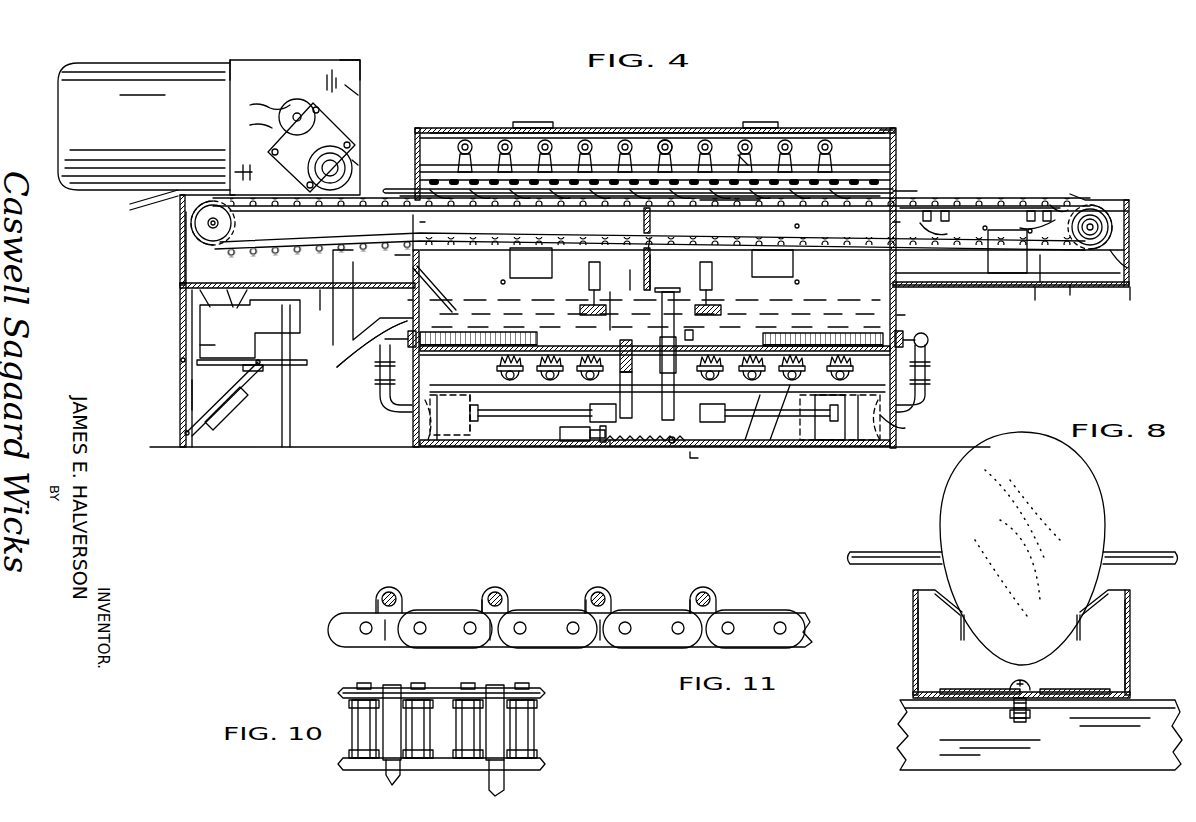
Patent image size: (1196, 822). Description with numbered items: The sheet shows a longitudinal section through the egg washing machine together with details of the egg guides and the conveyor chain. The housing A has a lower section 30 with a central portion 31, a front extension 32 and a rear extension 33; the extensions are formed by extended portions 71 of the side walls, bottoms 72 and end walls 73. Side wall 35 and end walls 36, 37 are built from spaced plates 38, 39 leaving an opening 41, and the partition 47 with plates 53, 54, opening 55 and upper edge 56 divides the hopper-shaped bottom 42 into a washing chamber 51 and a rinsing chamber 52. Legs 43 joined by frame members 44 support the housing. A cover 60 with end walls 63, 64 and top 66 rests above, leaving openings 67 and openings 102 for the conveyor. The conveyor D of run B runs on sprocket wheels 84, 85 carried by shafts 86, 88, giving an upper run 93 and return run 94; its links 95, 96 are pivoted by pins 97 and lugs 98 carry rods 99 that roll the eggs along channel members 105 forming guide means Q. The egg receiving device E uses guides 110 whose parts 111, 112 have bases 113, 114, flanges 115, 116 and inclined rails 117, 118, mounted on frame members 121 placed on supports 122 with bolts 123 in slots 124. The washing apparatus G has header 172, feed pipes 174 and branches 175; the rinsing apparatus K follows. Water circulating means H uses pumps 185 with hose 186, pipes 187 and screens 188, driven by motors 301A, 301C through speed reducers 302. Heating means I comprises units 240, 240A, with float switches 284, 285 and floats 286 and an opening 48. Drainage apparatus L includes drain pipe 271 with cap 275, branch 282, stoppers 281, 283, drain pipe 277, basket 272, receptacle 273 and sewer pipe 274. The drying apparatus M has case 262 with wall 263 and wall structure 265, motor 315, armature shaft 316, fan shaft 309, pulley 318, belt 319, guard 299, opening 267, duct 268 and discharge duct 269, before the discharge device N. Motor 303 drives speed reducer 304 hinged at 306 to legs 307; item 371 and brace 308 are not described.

In FIG. 4, the duct 269 is at (148, 80).
In FIG. 4, the wall structure 265 is at (290, 60).
In FIG. 4, the drying apparatus M is at (235, 62).
In FIG. 4, the case 262 is at (360, 62).
In FIG. 4, the left side wall 263 is at (352, 92).
In FIG. 4, the guard 299 is at (340, 128).
In FIG. 4, the shaft 309 is at (297, 113).
In FIG. 4, the armature shaft 316 is at (319, 161).
In FIG. 4, the motor 315 is at (350, 160).
In FIG. 4, the pulley 318 is at (250, 108).
In FIG. 4, the belt 319 is at (250, 128).
In FIG. 4, the discharge device N is at (142, 207).
In FIG. 4, the cover 60 is at (425, 125).
In FIG. 4, the end wall 64 is at (414, 155).
In FIG. 4, the openings 67 is at (412, 185).
In FIG. 4, the end wall 63 is at (897, 150).
In FIG. 4, the housing A is at (900, 136).
In FIG. 4, the openings 102 is at (870, 182).
In FIG. 4, the water conducting header 172 is at (486, 140).
In FIG. 4, the rinsing apparatus K is at (552, 143).
In FIG. 4, the top 66 is at (610, 133).
In FIG. 4, the transverse feed pipes 174 is at (700, 150).
In FIG. 4, the depending branches 175 is at (742, 158).
In FIG. 4, the water washing apparatus G is at (815, 148).
In FIG. 4, the sprocket wheels 85 is at (192, 225).
In FIG. 4, the conveyor D is at (1065, 184).
In FIG. 11, the conveyor D is at (785, 618).
In FIG. 10, the conveyor D is at (329, 667).
In FIG. 4, the end walls 73 is at (180, 258).
In FIG. 4, the shaft 88 is at (198, 247).
In FIG. 4, the shaft 86 is at (1092, 250).
In FIG. 4, the sprocket wheels 84 is at (1105, 226).
In FIG. 4, the supports 122 is at (1060, 212).
In FIG. 4, the transverse frame members 121 is at (952, 210).
In FIG. 8, the transverse frame members 121 is at (905, 765).
In FIG. 4, the upper run 93 is at (990, 200).
In FIG. 4, the egg receiving device E is at (1064, 203).
In FIG. 8, the egg receiving device E is at (905, 593).
In FIG. 4, the run B is at (1125, 264).
In FIG. 4, the channel members 105 is at (813, 222).
In FIG. 4, the plate 38 is at (412, 222).
In FIG. 4, the opening 41 is at (416, 240).
In FIG. 4, the plate 53 is at (643, 224).
In FIG. 4, the upper edge 56 is at (652, 236).
In FIG. 4, the guide means Q is at (720, 212).
In FIG. 4, the plate 39 is at (890, 262).
In FIG. 4, the chamber 52 is at (480, 266).
In FIG. 4, the cover plate 371 is at (512, 275).
In FIG. 4, the float operated switch 285 is at (590, 272).
In FIG. 4, the opening 55 is at (645, 250).
In FIG. 4, the partition 47 is at (625, 277).
In FIG. 4, the opening 48 is at (660, 268).
In FIG. 4, the cap 275 is at (668, 290).
In FIG. 4, the float operated switch 284 is at (712, 272).
In FIG. 4, the floats 286 is at (588, 308).
In FIG. 4, the stopper 281 is at (607, 345).
In FIG. 4, the wall 35 is at (895, 286).
In FIG. 4, the return run 94 is at (1045, 268).
In FIG. 4, the chamber 51 is at (780, 292).
In FIG. 4, the screens 188 is at (842, 333).
In FIG. 4, the central portion 31 is at (897, 300).
In FIG. 4, the wall 36 is at (897, 315).
In FIG. 4, the lower section 30 is at (903, 330).
In FIG. 4, the pipes 187 is at (925, 348).
In FIG. 4, the flexible hose 186 is at (928, 384).
In FIG. 4, the stopper 283 is at (655, 341).
In FIG. 4, the drain pipe 271 is at (693, 335).
In FIG. 4, the bottom 42 is at (492, 350).
In FIG. 4, the plate 54 is at (637, 379).
In FIG. 4, the heating unit 240A is at (543, 419).
In FIG. 4, the branch 282 is at (769, 419).
In FIG. 4, the screen basket 272 is at (645, 450).
In FIG. 4, the sewer pipe 274 is at (598, 442).
In FIG. 4, the receptacle 273 is at (614, 448).
In FIG. 4, the drain pipe 277 is at (622, 447).
In FIG. 4, the drainage apparatus L is at (691, 459).
In FIG. 4, the motor 301C is at (492, 428).
In FIG. 4, the motor 301A is at (812, 440).
In FIG. 4, the speed reducer 302 is at (830, 430).
In FIG. 4, the heating unit 240 is at (782, 398).
In FIG. 4, the heating means I is at (767, 400).
In FIG. 4, the legs 43 is at (647, 443).
In FIG. 4, the water pumps 185 is at (413, 442).
In FIG. 4, the frame members 44 is at (420, 450).
In FIG. 4, the water circulating means H is at (888, 430).
In FIG. 4, the bottoms 72 is at (197, 290).
In FIG. 4, the front extension 32 is at (1040, 296).
In FIG. 4, the extended portions 71 is at (335, 285).
In FIG. 4, the rear extension 33 is at (322, 297).
In FIG. 4, the wall 37 is at (413, 302).
In FIG. 4, the duct 268 is at (360, 355).
In FIG. 4, the opening 267 is at (252, 373).
In FIG. 4, the speed reducer 304 is at (215, 345).
In FIG. 4, the hinge 306 is at (180, 360).
In FIG. 4, the legs 307 is at (185, 397).
In FIG. 4, the motor 303 is at (272, 322).
In FIG. 4, the hydraulic cylinder 308 is at (228, 398).
In FIG. 8, the rod 99 is at (1132, 552).
In FIG. 11, the rod 99 is at (389, 590).
In FIG. 10, the rod 99 is at (520, 690).
In FIG. 8, the longitudinal part 111 is at (914, 610).
In FIG. 8, the flange 115 is at (914, 639).
In FIG. 8, the inclined rail 117 is at (950, 616).
In FIG. 8, the inclined rail 118 is at (1093, 615).
In FIG. 8, the longitudinal part 112 is at (1130, 612).
In FIG. 8, the flange 116 is at (1131, 641).
In FIG. 8, the transverse slots 124 is at (1040, 690).
In FIG. 8, the base 114 is at (1075, 690).
In FIG. 8, the guides 110 is at (1130, 692).
In FIG. 8, the bolts 123 is at (1012, 716).
In FIG. 8, the base 113 is at (955, 700).
In FIG. 11, the links 96 is at (458, 620).
In FIG. 10, the links 96 is at (440, 690).
In FIG. 11, the pins 97 is at (470, 626).
In FIG. 10, the pins 97 is at (476, 690).
In FIG. 11, the lug 98 is at (400, 605).
In FIG. 10, the lug 98 is at (504, 729).
In FIG. 11, the links 95 is at (380, 624).
In FIG. 10, the links 95 is at (540, 699).